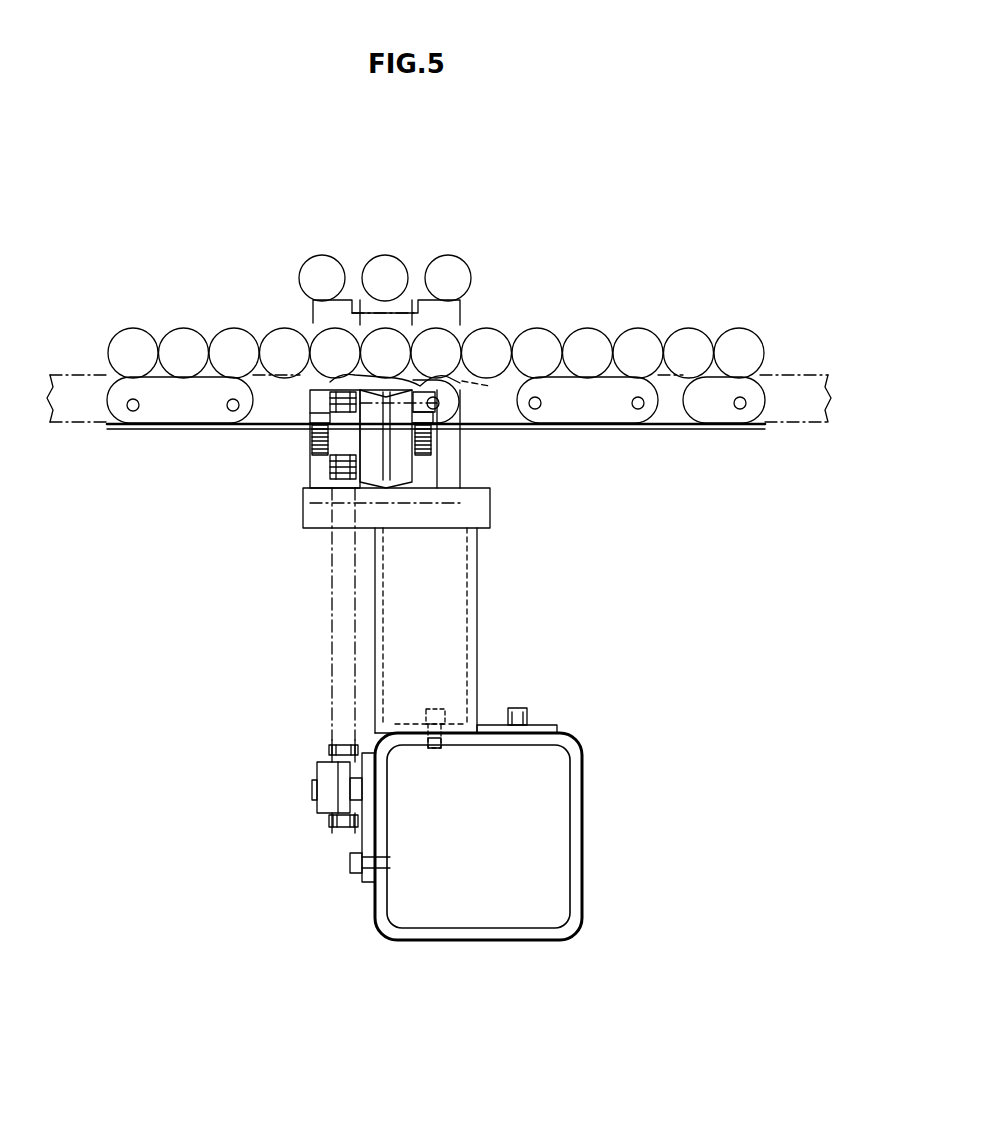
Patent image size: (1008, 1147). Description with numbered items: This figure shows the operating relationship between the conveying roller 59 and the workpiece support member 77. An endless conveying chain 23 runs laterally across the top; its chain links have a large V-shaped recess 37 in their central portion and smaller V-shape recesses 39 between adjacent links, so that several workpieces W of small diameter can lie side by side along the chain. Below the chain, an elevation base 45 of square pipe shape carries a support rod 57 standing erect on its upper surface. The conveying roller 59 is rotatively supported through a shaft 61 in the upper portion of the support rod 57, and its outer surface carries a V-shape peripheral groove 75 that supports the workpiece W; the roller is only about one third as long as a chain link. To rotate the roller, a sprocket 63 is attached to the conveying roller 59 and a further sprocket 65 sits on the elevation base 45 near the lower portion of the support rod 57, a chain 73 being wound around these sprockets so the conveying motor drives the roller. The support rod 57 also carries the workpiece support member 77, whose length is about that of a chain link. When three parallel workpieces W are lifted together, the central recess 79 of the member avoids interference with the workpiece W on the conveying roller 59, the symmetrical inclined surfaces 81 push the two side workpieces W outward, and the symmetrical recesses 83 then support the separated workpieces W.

The conveying chain 23 is at (678, 436).
The recess 37 is at (700, 433).
The V-shape recess 39 is at (640, 378).
The elevation base 45 is at (580, 802).
The support rod 57 is at (455, 607).
The conveying roller 59 is at (398, 305).
The shaft 61 is at (337, 441).
The sprocket 63 is at (332, 466).
The sprocket 65 is at (330, 778).
The chain 73 is at (343, 646).
The V-shape peripheral groove 75 is at (397, 530).
The workpiece support member 77 is at (311, 310).
The recess 79 is at (422, 392).
The inclined surface 81 is at (478, 372).
The recess 83 is at (312, 398).
The workpiece W is at (222, 343).